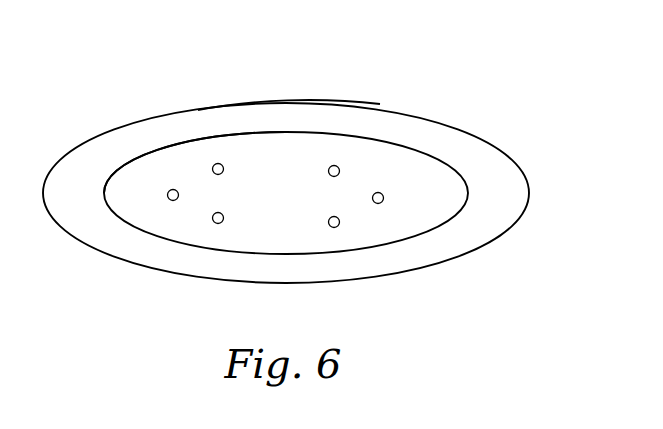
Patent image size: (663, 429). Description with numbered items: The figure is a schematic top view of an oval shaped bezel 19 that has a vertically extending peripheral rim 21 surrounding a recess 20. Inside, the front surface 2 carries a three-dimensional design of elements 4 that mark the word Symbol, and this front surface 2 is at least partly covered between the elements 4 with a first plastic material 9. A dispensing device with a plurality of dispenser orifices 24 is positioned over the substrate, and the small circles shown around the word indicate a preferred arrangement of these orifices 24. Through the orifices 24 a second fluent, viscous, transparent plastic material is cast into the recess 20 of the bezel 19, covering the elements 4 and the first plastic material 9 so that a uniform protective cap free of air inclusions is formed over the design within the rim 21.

The front surface 2 is at (435, 198).
The elements 4 is at (283, 207).
The first plastic material 9 is at (280, 152).
The bezel 19 is at (198, 110).
The recess 20 is at (247, 223).
The peripheral rim 21 is at (117, 147).
The dispenser orifices 24 is at (337, 165).